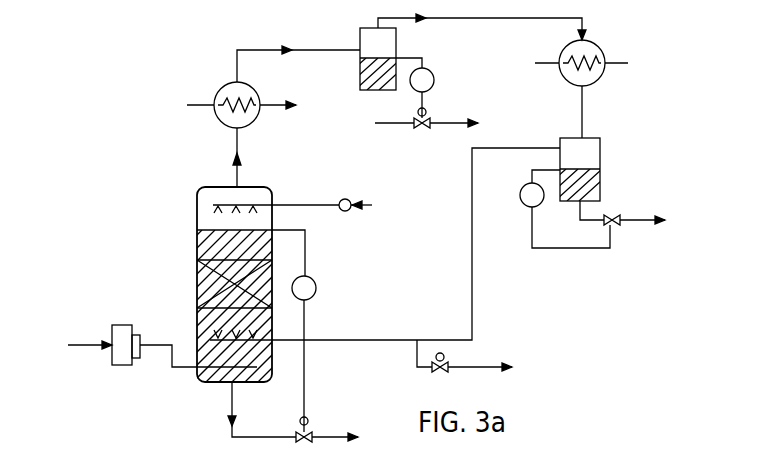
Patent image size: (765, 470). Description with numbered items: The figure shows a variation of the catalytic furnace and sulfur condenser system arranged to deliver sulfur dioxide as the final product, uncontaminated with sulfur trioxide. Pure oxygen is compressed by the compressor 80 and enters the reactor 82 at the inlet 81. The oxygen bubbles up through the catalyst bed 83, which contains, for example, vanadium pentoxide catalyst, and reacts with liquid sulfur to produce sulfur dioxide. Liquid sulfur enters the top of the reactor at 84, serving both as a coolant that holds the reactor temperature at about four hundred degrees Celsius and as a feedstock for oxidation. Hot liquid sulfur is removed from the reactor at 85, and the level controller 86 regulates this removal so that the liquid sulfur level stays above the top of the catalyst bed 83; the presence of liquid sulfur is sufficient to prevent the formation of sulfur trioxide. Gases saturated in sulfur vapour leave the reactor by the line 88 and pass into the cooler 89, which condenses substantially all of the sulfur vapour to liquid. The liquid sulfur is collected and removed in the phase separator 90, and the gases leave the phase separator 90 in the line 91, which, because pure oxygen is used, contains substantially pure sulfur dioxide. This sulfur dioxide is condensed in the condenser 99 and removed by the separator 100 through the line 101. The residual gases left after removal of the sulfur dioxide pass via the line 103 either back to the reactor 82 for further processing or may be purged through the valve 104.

The compressor 80 is at (132, 366).
The inlet 81 is at (187, 368).
The reactor 82 is at (198, 245).
The catalyst bed 83 is at (257, 287).
The liquid sulfur inlet 84 is at (284, 207).
The hot liquid sulfur outlet 85 is at (232, 416).
The level controller 86 is at (311, 296).
The line 88 is at (238, 172).
The cooler 89 is at (253, 121).
The phase separator 90 is at (397, 57).
The line 91 is at (514, 24).
The condenser 99 is at (634, 54).
The separator 100 is at (600, 163).
The line 101 is at (646, 218).
The line 103 is at (472, 300).
The valve 104 is at (430, 372).